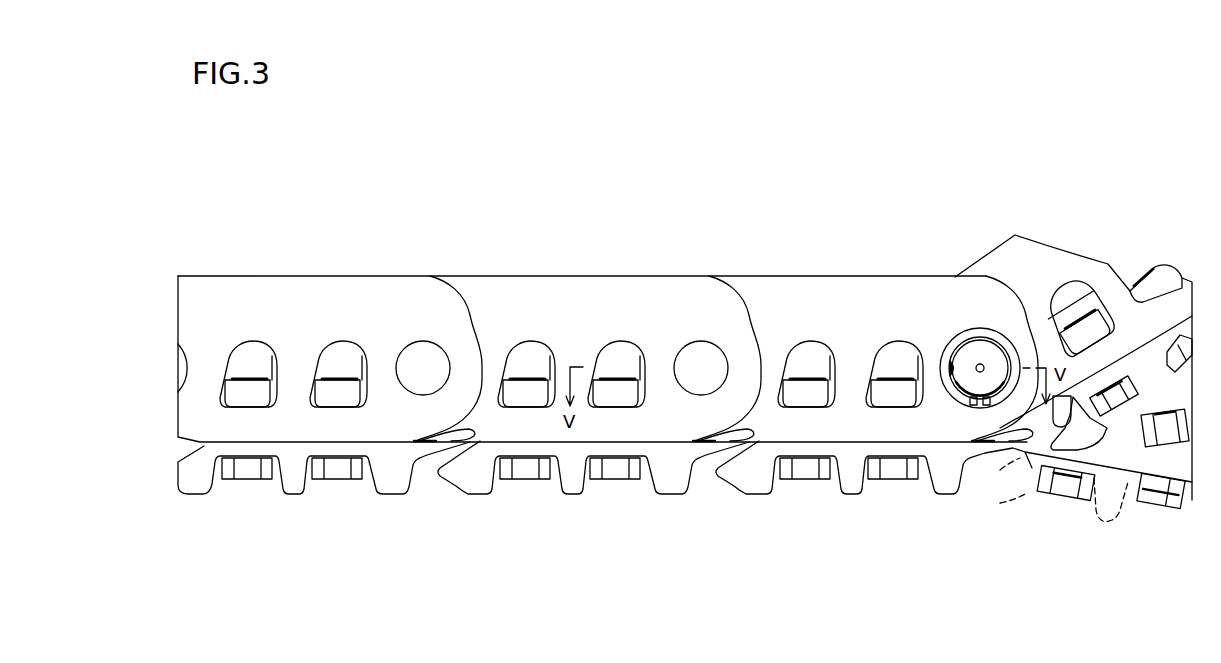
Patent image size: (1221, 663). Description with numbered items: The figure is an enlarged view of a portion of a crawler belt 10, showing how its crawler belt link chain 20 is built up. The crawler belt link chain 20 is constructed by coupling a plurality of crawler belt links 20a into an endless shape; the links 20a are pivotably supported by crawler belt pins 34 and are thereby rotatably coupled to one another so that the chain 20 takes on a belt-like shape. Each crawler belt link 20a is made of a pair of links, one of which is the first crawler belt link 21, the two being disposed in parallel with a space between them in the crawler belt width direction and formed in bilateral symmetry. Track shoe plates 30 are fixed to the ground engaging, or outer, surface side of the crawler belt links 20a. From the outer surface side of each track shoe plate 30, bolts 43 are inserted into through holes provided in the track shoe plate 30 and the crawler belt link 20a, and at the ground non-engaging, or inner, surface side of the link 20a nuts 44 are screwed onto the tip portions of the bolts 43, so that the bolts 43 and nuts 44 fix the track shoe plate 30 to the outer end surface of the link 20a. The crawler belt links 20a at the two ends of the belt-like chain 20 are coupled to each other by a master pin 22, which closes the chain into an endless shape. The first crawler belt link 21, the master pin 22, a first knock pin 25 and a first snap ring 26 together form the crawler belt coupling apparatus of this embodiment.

The crawler belt 10 is at (1095, 193).
The crawler belt link chain 20 is at (744, 195).
The crawler belt link 20a is at (592, 255).
The first crawler belt link 21 is at (878, 425).
The master pin 22 is at (992, 377).
The first knock pin 25 is at (947, 373).
The first snap ring 26 is at (972, 402).
The track shoe plate 30 is at (837, 452).
The crawler belt pin 34 is at (704, 378).
The bolt 43 is at (918, 468).
The nut 44 is at (897, 397).